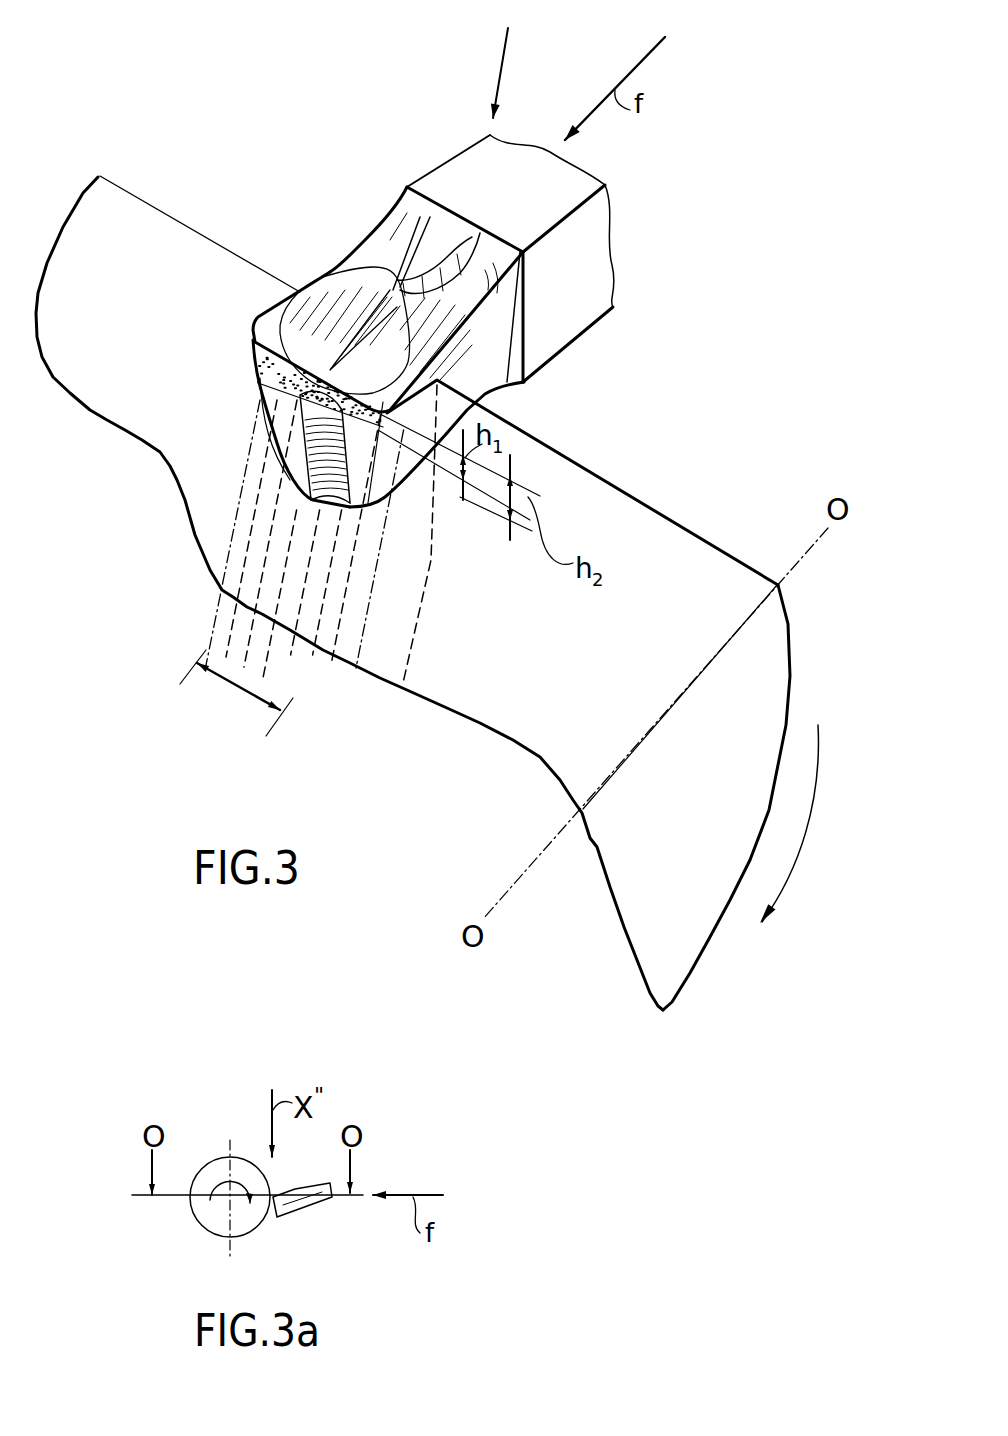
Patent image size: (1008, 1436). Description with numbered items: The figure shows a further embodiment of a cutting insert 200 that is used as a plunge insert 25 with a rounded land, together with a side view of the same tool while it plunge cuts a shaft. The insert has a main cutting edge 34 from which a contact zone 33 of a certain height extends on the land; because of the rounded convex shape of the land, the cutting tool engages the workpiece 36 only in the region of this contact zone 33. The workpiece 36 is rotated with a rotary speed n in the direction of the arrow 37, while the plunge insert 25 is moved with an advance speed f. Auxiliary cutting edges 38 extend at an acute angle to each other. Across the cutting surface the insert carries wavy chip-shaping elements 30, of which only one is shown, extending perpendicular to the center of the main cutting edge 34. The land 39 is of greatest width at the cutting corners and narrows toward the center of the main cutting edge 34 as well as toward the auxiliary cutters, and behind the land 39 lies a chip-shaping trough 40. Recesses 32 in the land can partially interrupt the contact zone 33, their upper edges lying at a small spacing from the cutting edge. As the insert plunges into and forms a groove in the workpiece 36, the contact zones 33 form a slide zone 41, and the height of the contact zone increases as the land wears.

In FIG. 3, the plunge insert 25 is at (560, 366).
In FIG. 3A, the plunge insert 25 is at (297, 1210).
In FIG. 3, the wavy chip-shaping element 30 is at (382, 342).
In FIG. 3, the recess 32 is at (310, 452).
In FIG. 3, the contact zone 33 is at (256, 372).
In FIG. 3, the main cutting edge 34 is at (272, 340).
In FIG. 3, the workpiece 36 is at (760, 677).
In FIG. 3A, the workpiece 36 is at (210, 1227).
In FIG. 3, the arrow 37 is at (805, 838).
In FIG. 3A, the arrow 37 is at (223, 1177).
In FIG. 3, the auxiliary cutting edge 38 is at (325, 318).
In FIG. 3, the land 39 is at (388, 480).
In FIG. 3, the chip-shaping trough 40 is at (336, 312).
In FIG. 3, the slide zone 41 is at (228, 688).
In FIG. 3, the cutting insert 200 is at (516, 59).